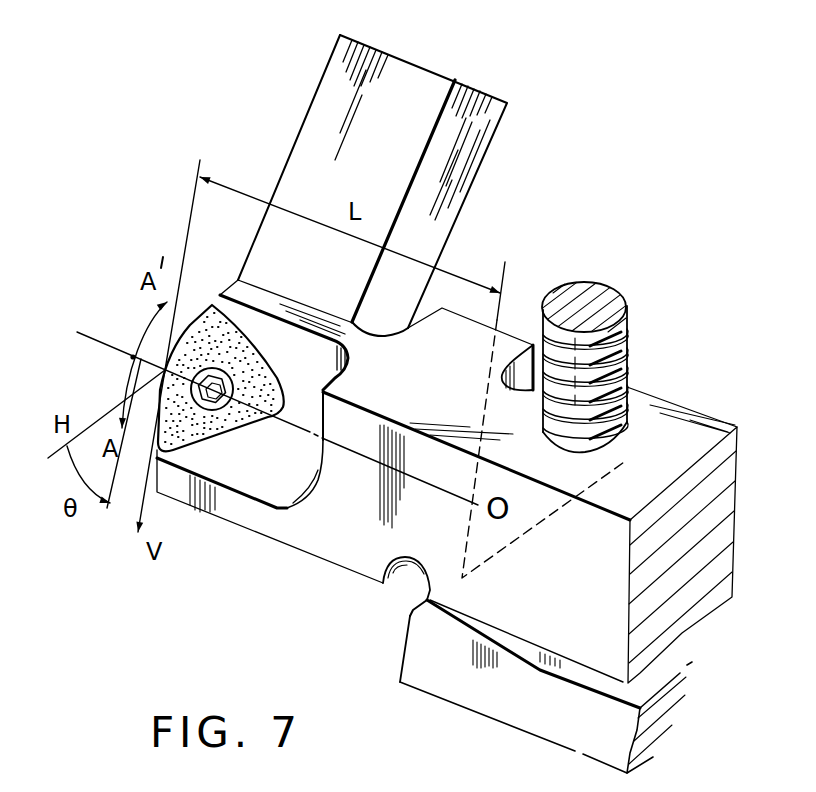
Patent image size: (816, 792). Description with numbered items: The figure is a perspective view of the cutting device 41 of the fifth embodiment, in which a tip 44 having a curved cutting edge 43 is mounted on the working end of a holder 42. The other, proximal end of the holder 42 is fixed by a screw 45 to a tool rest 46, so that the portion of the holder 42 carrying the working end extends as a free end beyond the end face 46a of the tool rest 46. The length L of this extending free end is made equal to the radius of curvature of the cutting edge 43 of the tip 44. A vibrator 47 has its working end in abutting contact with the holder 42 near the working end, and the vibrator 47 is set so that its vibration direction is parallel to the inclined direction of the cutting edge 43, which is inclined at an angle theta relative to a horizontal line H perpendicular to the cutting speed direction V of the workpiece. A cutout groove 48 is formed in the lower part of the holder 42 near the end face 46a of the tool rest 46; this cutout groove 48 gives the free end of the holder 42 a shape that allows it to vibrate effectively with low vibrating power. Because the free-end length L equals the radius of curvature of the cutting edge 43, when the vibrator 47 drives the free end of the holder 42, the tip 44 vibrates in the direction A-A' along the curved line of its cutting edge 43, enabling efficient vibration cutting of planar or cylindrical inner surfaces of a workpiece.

The cutting device 41 is at (622, 148).
The holder 42 is at (518, 368).
The cutting edge 43 is at (238, 440).
The tip 44 is at (188, 310).
The screw 45 is at (626, 368).
The tool rest 46 is at (440, 660).
The end face 46a is at (404, 652).
The vibrator 47 is at (468, 162).
The cutout groove 48 is at (536, 330).